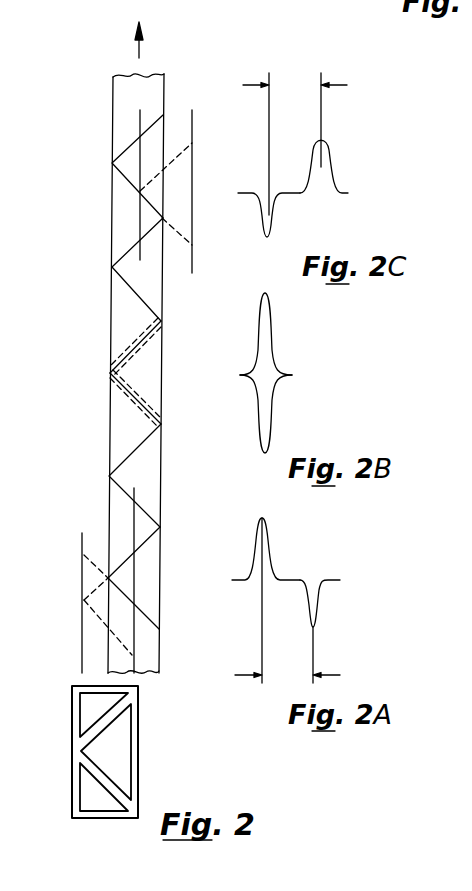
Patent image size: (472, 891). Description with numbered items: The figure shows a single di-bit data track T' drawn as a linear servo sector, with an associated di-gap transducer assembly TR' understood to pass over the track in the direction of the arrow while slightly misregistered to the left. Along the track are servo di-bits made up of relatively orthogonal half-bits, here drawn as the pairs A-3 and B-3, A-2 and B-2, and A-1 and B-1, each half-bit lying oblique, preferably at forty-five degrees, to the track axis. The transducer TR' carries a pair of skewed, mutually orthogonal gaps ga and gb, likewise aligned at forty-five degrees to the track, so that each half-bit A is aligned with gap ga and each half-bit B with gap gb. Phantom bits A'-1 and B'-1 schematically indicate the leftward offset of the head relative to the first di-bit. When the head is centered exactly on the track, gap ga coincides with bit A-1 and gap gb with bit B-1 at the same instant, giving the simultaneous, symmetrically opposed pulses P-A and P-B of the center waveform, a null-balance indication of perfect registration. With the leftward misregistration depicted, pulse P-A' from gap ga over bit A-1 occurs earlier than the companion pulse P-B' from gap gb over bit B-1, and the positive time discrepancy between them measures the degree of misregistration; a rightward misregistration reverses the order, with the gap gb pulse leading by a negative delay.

In FIG. 2, the di-bit data track T' is at (129, 348).
In FIG. 2, the half-bit A of third di-bit A-3 is at (125, 255).
In FIG. 2, the half-bit B of third di-bit B-3 is at (125, 279).
In FIG. 2, the half-bit A of second di-bit A-2 is at (122, 362).
In FIG. 2, the half-bit B of second di-bit B-2 is at (126, 393).
In FIG. 2, the half-bit A of first di-bit A-1 is at (130, 556).
In FIG. 2, the half-bit B of first di-bit B-1 is at (152, 621).
In FIG. 2, the phantom bit A'-1 is at (66, 593).
In FIG. 2, the phantom bit B'-1 is at (78, 580).
In FIG. 2, the di-gap transducer assembly TR' is at (107, 752).
In FIG. 2, the transducer gap ga is at (88, 727).
In FIG. 2, the transducer gap gb is at (122, 791).
In FIG. 2A, the output pulse P-A' is at (256, 600).
In FIG. 2A, the output pulse P-B' is at (327, 631).
In FIG. 2B, the servo-output pulse P-A is at (259, 334).
In FIG. 2B, the servo-output pulse P-B is at (258, 414).